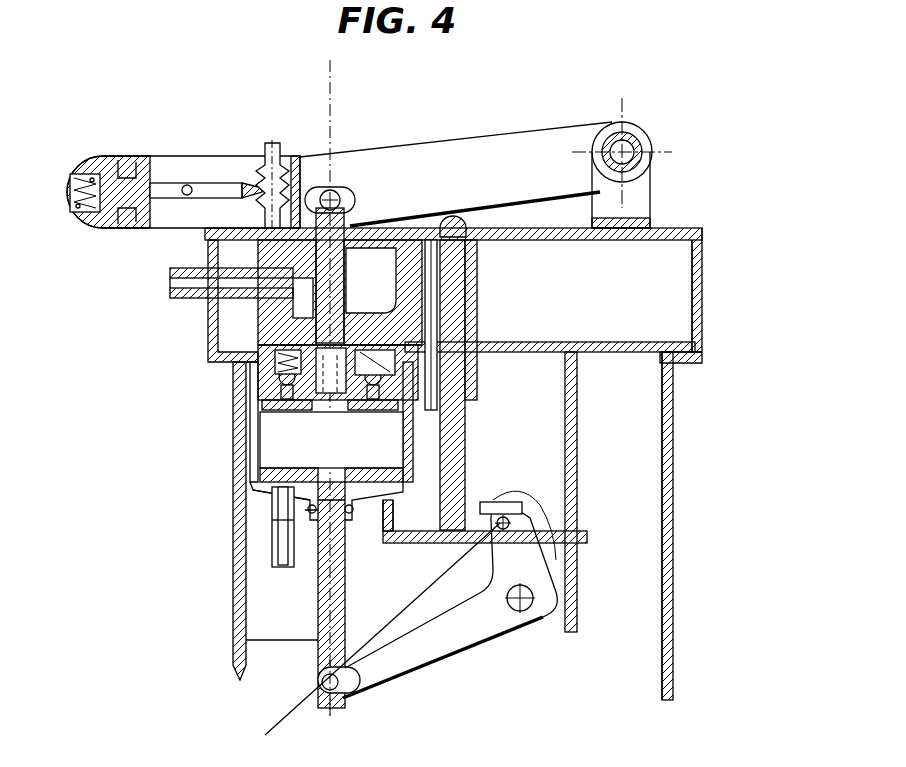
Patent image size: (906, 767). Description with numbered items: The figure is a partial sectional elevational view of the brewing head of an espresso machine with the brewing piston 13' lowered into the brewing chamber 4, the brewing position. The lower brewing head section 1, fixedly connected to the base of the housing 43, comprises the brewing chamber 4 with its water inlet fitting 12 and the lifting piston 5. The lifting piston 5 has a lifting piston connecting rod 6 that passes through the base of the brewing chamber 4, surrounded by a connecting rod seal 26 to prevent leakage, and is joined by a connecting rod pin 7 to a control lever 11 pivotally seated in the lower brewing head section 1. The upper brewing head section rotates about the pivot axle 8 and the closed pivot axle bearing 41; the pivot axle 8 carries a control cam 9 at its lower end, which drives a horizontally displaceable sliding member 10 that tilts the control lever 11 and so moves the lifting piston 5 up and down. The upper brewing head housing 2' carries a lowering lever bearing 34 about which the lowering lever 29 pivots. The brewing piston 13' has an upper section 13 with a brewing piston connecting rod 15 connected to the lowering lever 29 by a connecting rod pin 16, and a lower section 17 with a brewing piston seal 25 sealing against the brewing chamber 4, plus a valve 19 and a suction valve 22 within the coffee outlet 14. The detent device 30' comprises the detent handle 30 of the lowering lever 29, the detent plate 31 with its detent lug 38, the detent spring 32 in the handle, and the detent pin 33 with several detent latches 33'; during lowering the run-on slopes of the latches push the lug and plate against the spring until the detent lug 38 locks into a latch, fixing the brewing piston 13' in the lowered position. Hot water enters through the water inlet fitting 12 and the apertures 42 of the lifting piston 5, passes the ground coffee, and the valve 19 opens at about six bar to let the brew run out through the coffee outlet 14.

The lower brewing head section 1 is at (675, 386).
The upper brewing head housing 2' is at (491, 295).
The brewing chamber 4 is at (256, 470).
The lifting piston 5 is at (268, 482).
The lifting piston connecting rod 6 is at (280, 628).
The connecting rod pin 7 is at (318, 692).
The pivot axle 8 is at (476, 440).
The control cam 9 is at (455, 560).
The sliding member 10 is at (440, 565).
The control lever 11 is at (488, 625).
The water inlet fitting 12 is at (288, 548).
The upper section 13 is at (257, 301).
The brewing piston 13' is at (251, 521).
The coffee outlet 14 is at (176, 283).
The brewing piston connecting rod 15 is at (453, 226).
The connecting rod pin 16 is at (336, 192).
The lower section 17 is at (276, 372).
The valve 19 is at (260, 350).
The suction valve 22 is at (438, 405).
The brewing piston seal 25 is at (268, 418).
The connecting rod seal 26 is at (282, 517).
The lowering lever 29 is at (440, 158).
The detent handle 30 is at (112, 156).
The detent device 30' is at (220, 121).
The detent plate 31 is at (170, 188).
The detent spring 32 is at (84, 172).
The detent pin 33 is at (267, 158).
The detent latches 33' is at (303, 156).
The lowering lever bearing 34 is at (640, 207).
The detent lug 38 is at (246, 188).
The closed pivot axle bearing 41 is at (470, 297).
The apertures 42 is at (382, 465).
The housing 43 is at (692, 653).